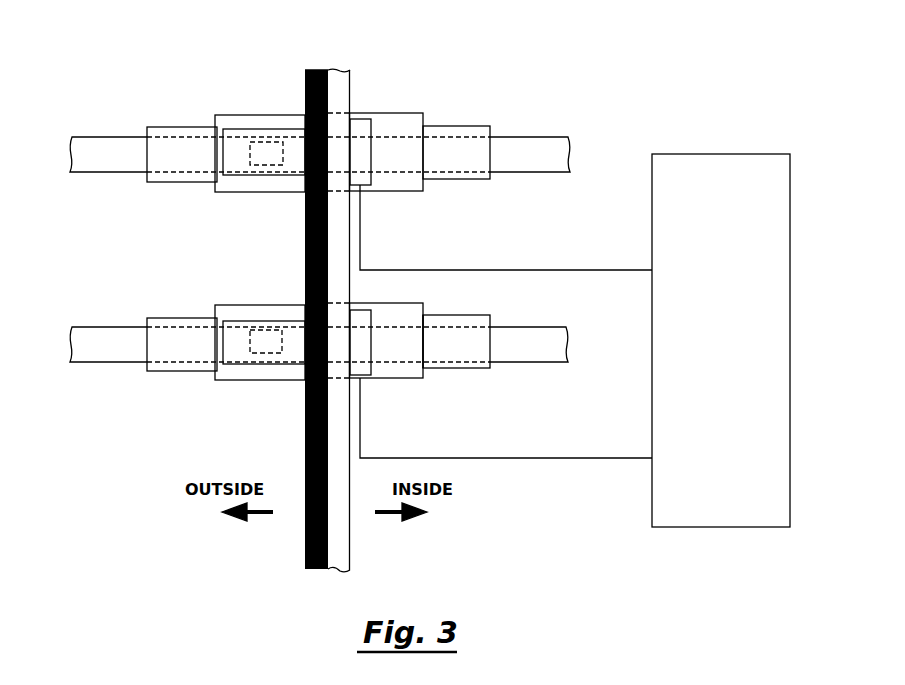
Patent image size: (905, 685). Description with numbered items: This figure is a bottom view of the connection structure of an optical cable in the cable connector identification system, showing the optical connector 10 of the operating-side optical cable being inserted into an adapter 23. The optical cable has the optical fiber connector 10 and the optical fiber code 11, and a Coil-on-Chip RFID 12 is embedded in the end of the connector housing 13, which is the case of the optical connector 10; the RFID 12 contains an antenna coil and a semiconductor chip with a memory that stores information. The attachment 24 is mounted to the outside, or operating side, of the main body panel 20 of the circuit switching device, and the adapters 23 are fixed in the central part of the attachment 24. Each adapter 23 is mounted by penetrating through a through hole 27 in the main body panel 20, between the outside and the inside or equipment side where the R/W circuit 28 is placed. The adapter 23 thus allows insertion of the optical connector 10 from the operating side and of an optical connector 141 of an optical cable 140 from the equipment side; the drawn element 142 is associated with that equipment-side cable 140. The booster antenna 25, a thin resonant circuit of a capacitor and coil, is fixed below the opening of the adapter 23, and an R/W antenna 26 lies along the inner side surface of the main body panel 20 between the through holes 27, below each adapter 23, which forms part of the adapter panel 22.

The optical fiber connector 10 is at (186, 322).
The optical fiber code 11 is at (108, 336).
The Coil-on-Chip RFID 12 is at (268, 342).
The connector housing 13 is at (173, 371).
The main body panel 20 is at (345, 555).
The adapter panel 22 is at (305, 556).
The adapter 23 is at (253, 113).
The attachment 24 is at (318, 70).
The booster antenna 25 is at (231, 162).
The R/W antenna 26 is at (368, 175).
The through hole 27 is at (340, 112).
The R/W circuit 28 is at (712, 165).
The optical cable 140 is at (545, 363).
The optical connector 141 is at (455, 368).
The fitting 142 is at (468, 320).